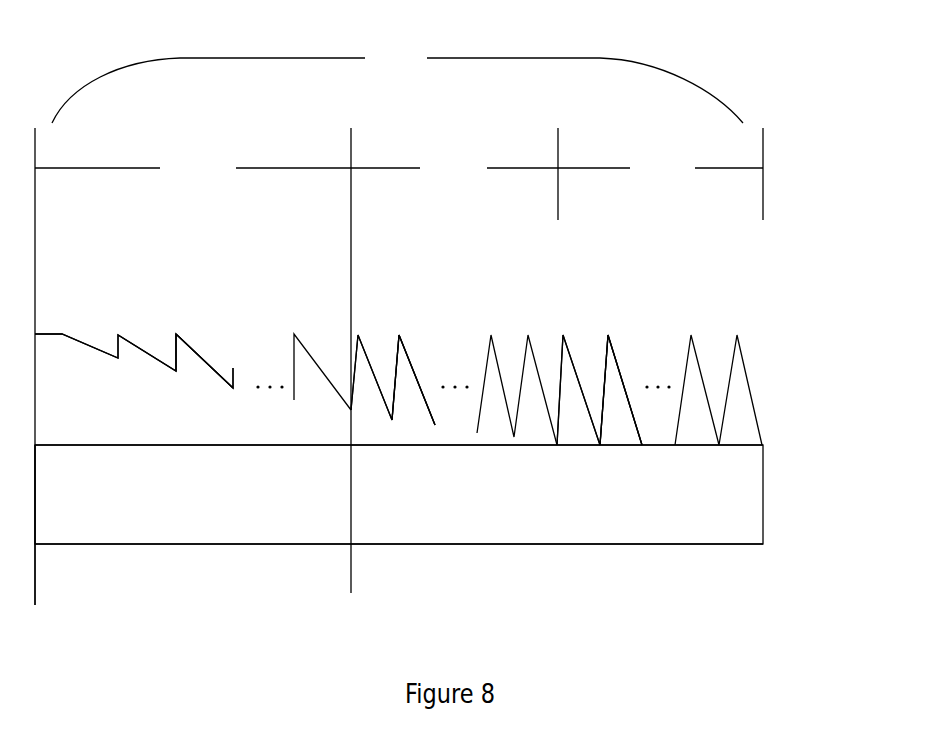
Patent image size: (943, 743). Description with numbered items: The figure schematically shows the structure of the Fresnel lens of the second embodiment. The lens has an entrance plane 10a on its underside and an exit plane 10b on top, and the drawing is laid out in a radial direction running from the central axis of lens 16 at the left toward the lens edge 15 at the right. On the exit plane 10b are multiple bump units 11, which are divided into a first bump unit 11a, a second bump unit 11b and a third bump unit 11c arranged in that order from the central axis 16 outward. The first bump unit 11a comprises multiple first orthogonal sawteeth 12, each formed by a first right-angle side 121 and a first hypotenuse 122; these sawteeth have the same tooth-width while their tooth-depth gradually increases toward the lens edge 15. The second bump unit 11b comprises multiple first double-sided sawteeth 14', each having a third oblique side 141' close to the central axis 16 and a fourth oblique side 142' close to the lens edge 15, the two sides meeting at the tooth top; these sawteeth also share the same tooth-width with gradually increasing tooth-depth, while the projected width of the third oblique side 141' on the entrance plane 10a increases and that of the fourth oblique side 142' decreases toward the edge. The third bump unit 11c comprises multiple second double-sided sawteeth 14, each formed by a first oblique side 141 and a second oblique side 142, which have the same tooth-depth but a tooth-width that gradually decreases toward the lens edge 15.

The bump units 11 is at (399, 321).
The first bump unit 11a is at (193, 280).
The second bump unit 11b is at (454, 297).
The third bump unit 11c is at (660, 297).
The first orthogonal sawteeth 12 is at (185, 352).
The first right-angle side 121 is at (175, 348).
The first hypotenuse 122 is at (197, 353).
The first double-sided sawteeth 14' is at (412, 327).
The third oblique side 141' is at (378, 359).
The fourth oblique side 142' is at (443, 361).
The second double-sided sawteeth 14 is at (612, 337).
The first oblique side 141 is at (588, 365).
The second oblique side 142 is at (651, 365).
The exit plane 10b is at (763, 395).
The lens edge 15 is at (763, 490).
The entrance plane 10a is at (570, 544).
The central axis of lens 16 is at (37, 558).